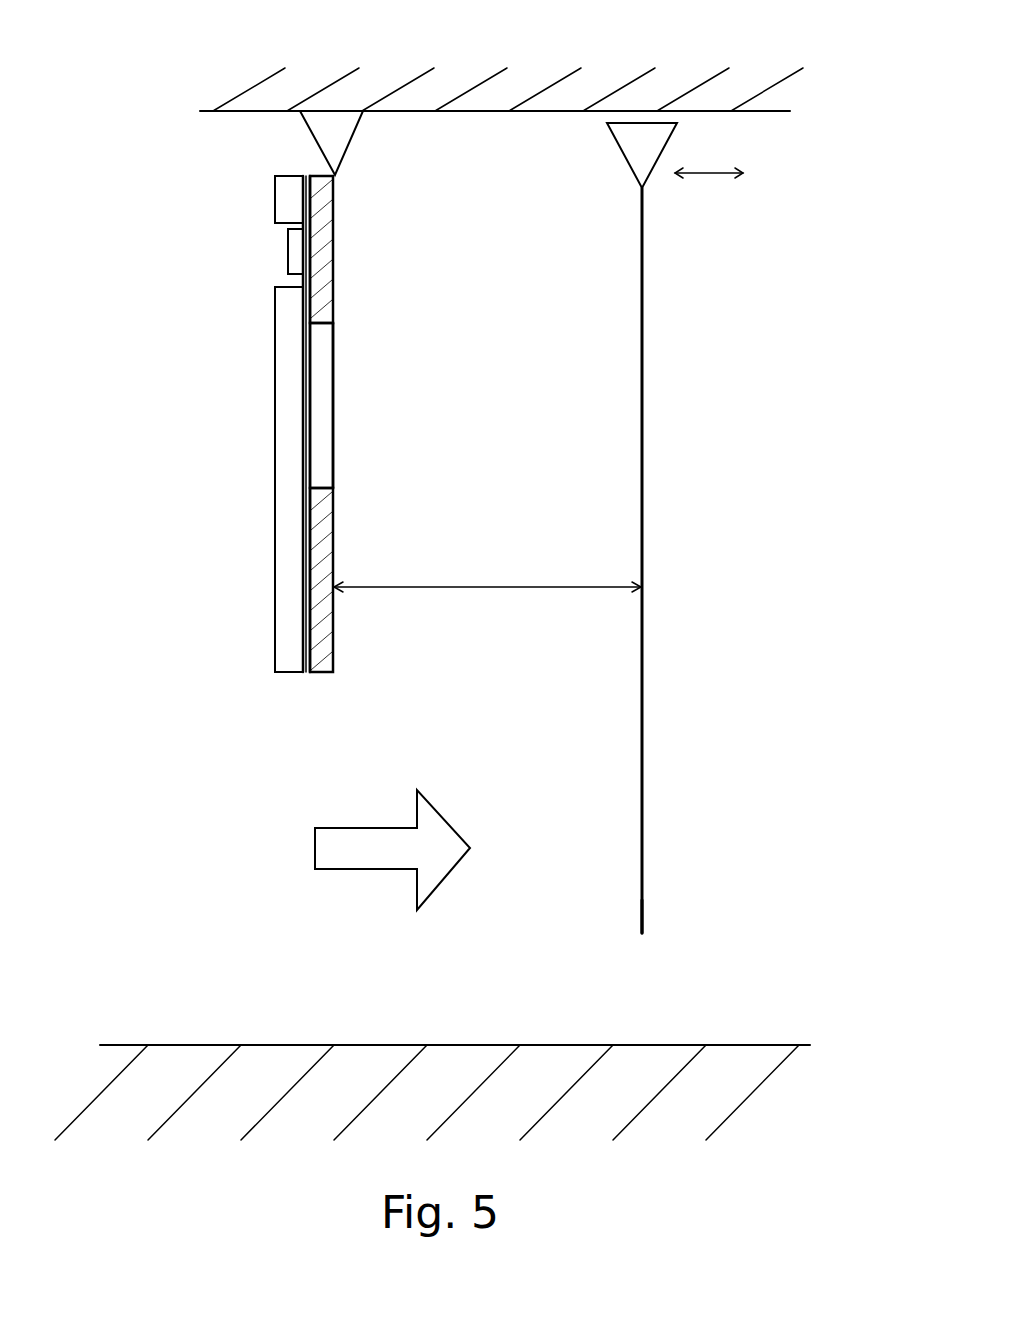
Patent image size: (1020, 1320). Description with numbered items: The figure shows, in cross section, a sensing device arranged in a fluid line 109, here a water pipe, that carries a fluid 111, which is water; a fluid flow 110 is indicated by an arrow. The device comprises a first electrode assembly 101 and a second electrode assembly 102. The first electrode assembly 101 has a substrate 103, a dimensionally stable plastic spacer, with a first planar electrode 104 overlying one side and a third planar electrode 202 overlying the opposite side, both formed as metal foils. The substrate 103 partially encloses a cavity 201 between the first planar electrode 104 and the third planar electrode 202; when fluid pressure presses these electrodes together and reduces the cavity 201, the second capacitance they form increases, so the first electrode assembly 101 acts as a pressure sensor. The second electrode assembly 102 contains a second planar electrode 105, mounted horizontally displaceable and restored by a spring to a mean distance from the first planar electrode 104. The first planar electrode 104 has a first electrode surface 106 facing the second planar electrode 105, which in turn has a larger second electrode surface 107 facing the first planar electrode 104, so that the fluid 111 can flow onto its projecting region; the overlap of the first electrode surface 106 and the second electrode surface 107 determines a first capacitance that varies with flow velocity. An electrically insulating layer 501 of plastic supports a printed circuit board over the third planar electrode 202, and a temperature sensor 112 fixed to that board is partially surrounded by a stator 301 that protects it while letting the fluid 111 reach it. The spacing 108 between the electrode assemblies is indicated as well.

The first electrode assembly 101 is at (312, 445).
The second electrode assembly 102 is at (647, 952).
The substrate 103 is at (320, 250).
The first planar electrode 104 is at (335, 635).
The second planar electrode 105 is at (644, 638).
The first electrode surface 106 is at (335, 335).
The second electrode surface 107 is at (640, 287).
The distance 108 is at (487, 600).
The fluid line 109 is at (526, 91).
The fluid flow 110 is at (315, 848).
The fluid 111 is at (215, 921).
The temperature sensor 112 is at (288, 252).
The cavity 201 is at (320, 408).
The third planar electrode 202 is at (305, 480).
The stator 301 is at (275, 205).
The electrically insulating layer 501 is at (303, 175).